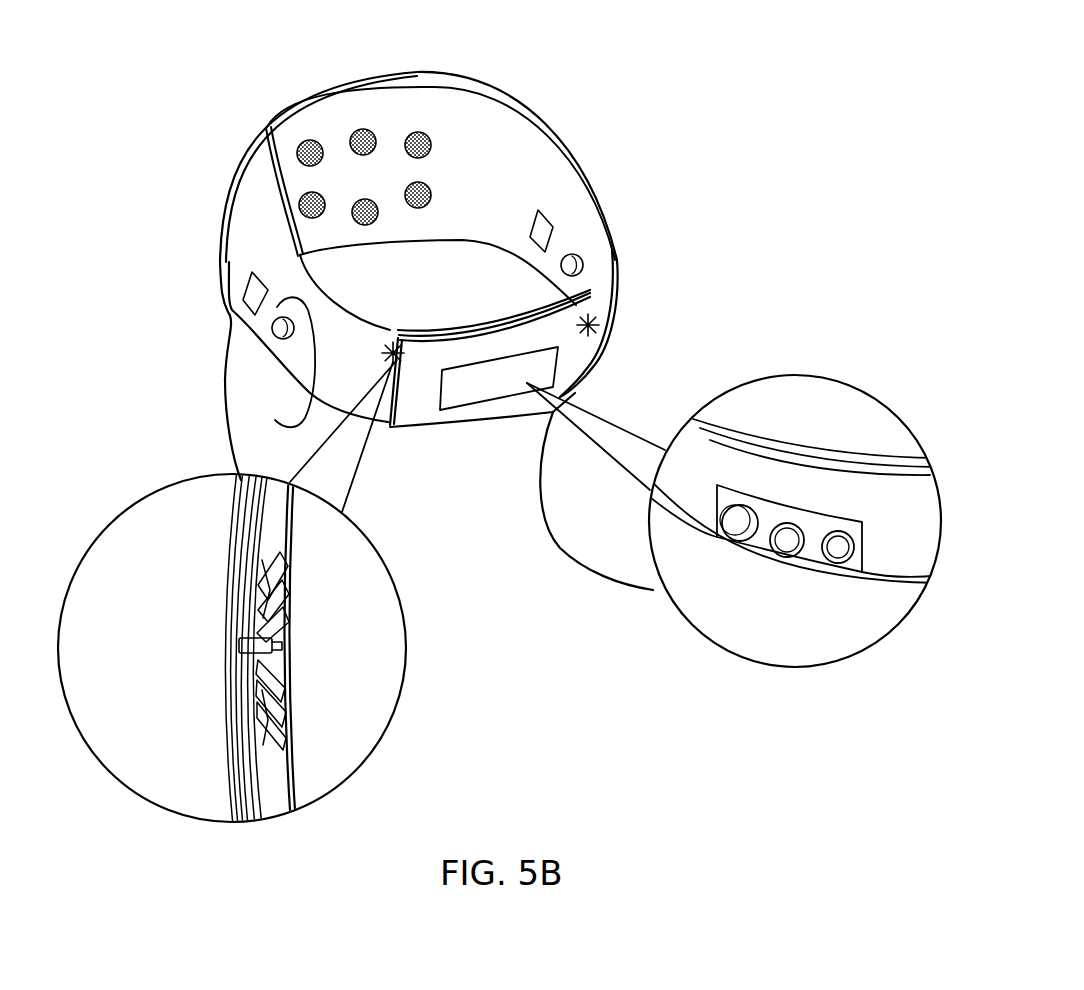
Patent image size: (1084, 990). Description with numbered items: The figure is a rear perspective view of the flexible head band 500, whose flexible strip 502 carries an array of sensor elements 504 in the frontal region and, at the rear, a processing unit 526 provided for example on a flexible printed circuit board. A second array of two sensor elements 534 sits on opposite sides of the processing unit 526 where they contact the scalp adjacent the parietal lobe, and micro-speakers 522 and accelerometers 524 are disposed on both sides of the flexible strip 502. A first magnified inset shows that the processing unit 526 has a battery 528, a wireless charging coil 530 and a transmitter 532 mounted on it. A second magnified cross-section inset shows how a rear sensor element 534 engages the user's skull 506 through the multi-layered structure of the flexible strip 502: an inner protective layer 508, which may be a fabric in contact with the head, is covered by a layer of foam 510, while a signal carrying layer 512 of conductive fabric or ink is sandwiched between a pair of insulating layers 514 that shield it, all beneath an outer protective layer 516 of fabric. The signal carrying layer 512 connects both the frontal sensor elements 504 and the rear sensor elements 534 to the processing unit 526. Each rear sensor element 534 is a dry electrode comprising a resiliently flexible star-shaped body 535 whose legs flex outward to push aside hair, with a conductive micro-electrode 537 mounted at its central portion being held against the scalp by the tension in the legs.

The head band 500 is at (203, 127).
The flexible strip 502 is at (243, 213).
The sensor elements 504 is at (418, 128).
The user's skull 506 is at (387, 675).
The inner protective layer 508 is at (267, 790).
The layer of foam 510 is at (250, 730).
The signal carrying layer 512 is at (232, 595).
The insulating layers 514 is at (243, 528).
The outer protective layer 516 is at (225, 682).
The micro-speakers 522 is at (272, 337).
The accelerometers 524 is at (245, 307).
The processing unit 526 is at (486, 396).
The battery 528 is at (735, 537).
The wireless charging coil 530 is at (777, 563).
The transmitter 532 is at (837, 570).
The sensor elements 534 is at (395, 350).
The star-shaped body 535 is at (288, 700).
The conductive micro-electrode 537 is at (284, 643).